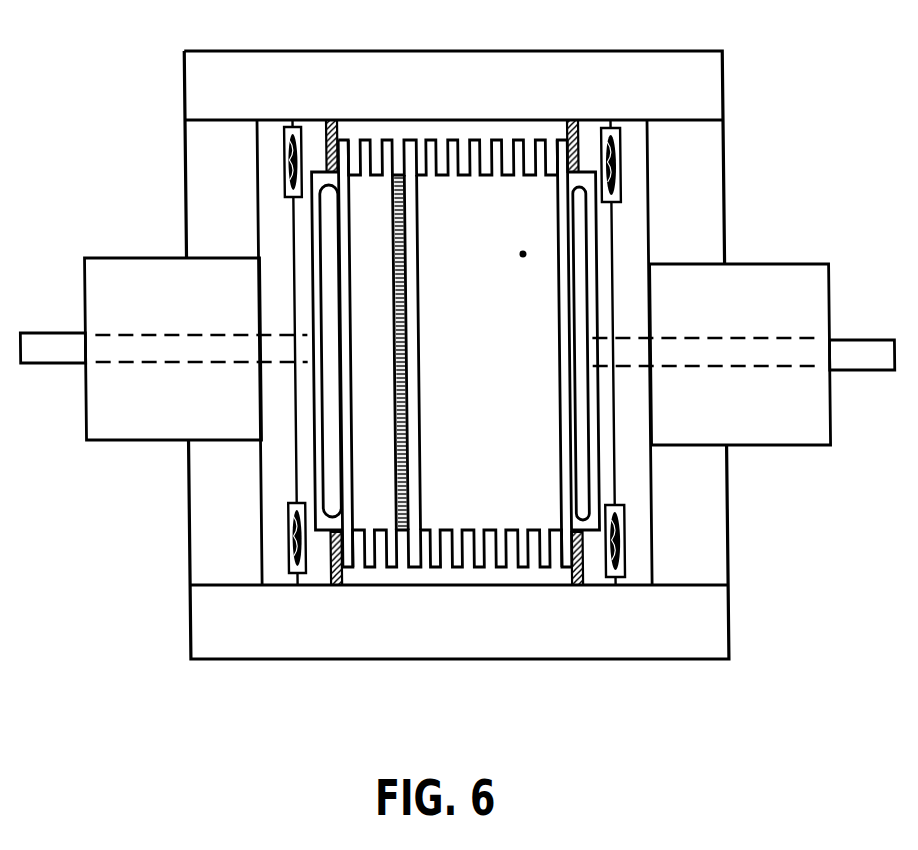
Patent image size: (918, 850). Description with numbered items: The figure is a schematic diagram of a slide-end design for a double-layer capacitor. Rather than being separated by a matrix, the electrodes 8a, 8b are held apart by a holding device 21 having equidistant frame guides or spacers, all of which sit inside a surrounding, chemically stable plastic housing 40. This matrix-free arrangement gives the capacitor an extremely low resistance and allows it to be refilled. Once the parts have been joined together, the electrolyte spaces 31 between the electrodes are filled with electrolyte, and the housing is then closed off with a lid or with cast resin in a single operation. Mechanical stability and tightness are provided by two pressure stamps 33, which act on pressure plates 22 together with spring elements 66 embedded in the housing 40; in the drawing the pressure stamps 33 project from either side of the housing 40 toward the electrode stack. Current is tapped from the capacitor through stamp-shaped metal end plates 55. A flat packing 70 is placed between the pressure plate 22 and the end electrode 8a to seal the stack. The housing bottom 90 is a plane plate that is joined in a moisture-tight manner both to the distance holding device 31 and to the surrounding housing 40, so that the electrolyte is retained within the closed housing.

The housing 40 is at (187, 552).
The pressure stamp 33 is at (257, 293).
The flat packing 70 is at (329, 581).
The electrode 8a is at (566, 578).
The holding device 21 is at (417, 578).
The electrolyte space 31 is at (386, 199).
The electrode 8b is at (417, 493).
The pressure plate 22 is at (298, 232).
The stamp-shaped metal end plate 55 is at (325, 390).
The spring element 66 is at (292, 563).
The housing bottom 90 is at (513, 277).